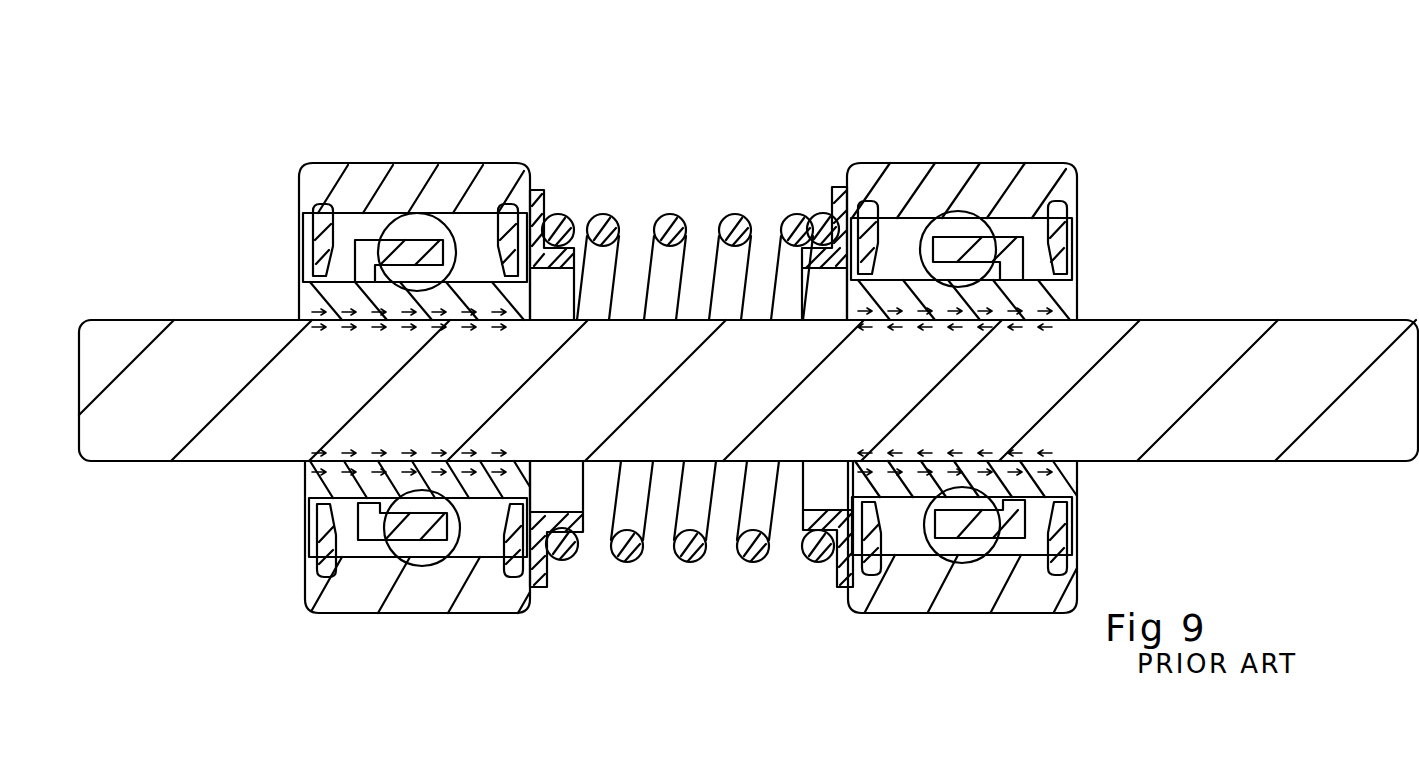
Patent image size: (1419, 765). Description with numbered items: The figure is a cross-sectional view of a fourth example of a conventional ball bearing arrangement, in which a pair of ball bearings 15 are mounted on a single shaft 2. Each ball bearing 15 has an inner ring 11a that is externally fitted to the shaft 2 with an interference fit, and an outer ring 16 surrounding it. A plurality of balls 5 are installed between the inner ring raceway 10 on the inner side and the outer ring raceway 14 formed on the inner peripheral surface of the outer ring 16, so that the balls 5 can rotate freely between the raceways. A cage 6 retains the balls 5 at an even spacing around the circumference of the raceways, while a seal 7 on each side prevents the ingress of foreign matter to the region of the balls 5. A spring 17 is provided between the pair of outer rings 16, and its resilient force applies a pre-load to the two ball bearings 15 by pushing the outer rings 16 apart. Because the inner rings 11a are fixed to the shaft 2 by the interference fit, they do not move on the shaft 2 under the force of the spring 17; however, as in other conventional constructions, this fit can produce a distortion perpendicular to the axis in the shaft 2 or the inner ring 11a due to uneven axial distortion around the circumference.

The shaft 2 is at (699, 340).
The balls 5 is at (543, 192).
The cage 6 is at (365, 240).
The seal 7 is at (312, 243).
The first inner ring raceway 10 is at (418, 292).
The inner ring 11a is at (312, 297).
The outer ring raceway 14 is at (422, 213).
The ball bearing 15 is at (455, 228).
The outer ring 16 is at (397, 170).
The spring 17 is at (625, 558).